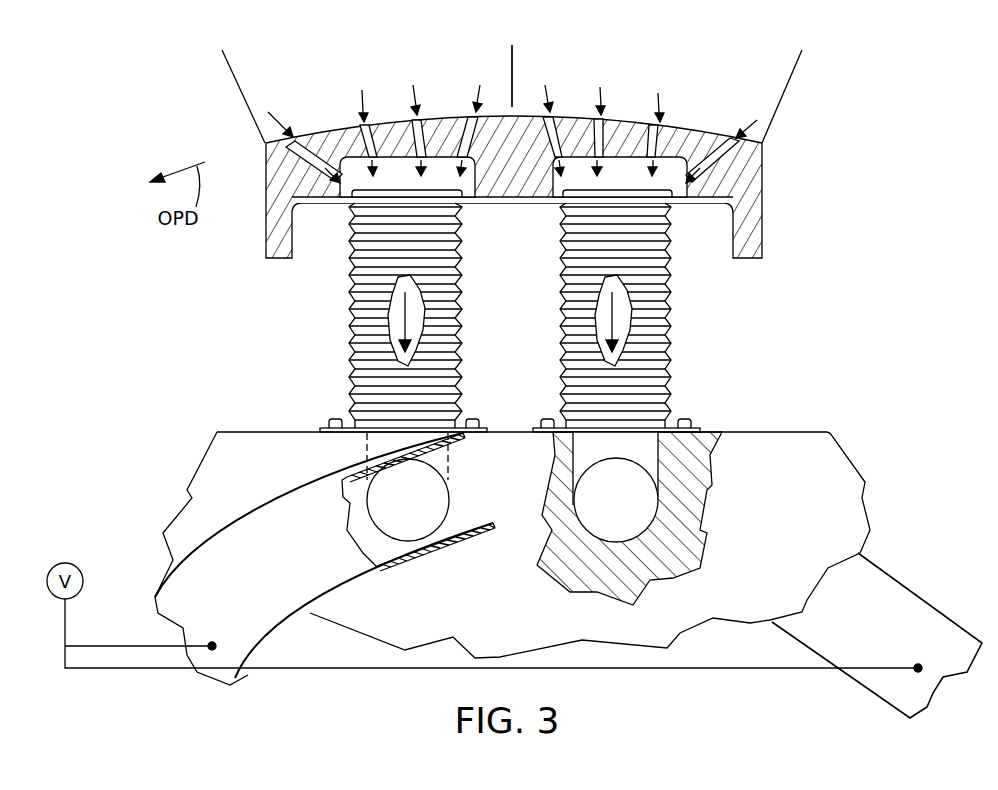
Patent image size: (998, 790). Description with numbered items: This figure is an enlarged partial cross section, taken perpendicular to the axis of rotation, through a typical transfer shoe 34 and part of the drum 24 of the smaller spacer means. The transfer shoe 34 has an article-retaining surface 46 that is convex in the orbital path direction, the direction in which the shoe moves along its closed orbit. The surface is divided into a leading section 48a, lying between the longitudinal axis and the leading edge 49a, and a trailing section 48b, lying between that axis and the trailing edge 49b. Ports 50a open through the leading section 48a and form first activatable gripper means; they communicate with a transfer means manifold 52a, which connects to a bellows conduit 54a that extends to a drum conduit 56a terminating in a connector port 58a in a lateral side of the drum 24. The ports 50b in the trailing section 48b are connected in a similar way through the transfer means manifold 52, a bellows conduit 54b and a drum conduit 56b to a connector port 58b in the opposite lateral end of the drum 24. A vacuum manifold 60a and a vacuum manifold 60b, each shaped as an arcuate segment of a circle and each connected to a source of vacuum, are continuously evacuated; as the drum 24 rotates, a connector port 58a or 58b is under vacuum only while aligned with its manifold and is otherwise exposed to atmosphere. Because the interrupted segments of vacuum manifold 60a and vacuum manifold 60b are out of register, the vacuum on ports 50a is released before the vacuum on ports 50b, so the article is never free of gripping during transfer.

The drum 24 is at (250, 440).
The transfer shoe 34 is at (524, 201).
The article-retaining surface 46 is at (222, 53).
The leading section 48a is at (243, 88).
The trailing section 48b is at (513, 48).
The leading edge 49a is at (266, 216).
The trailing edge 49b is at (762, 222).
The ports 50a is at (363, 130).
The ports 50b is at (598, 119).
The transfer means manifold 52 is at (582, 180).
The transfer means manifold 52a is at (368, 180).
The bellows conduit 54a is at (348, 307).
The bellows conduit 54b is at (672, 289).
The drum conduit 56a is at (391, 510).
The drum conduit 56b is at (640, 511).
The connector port 58a is at (446, 510).
The connector port 58b is at (660, 490).
The vacuum manifold 60a is at (338, 581).
The vacuum manifold 60b is at (900, 593).